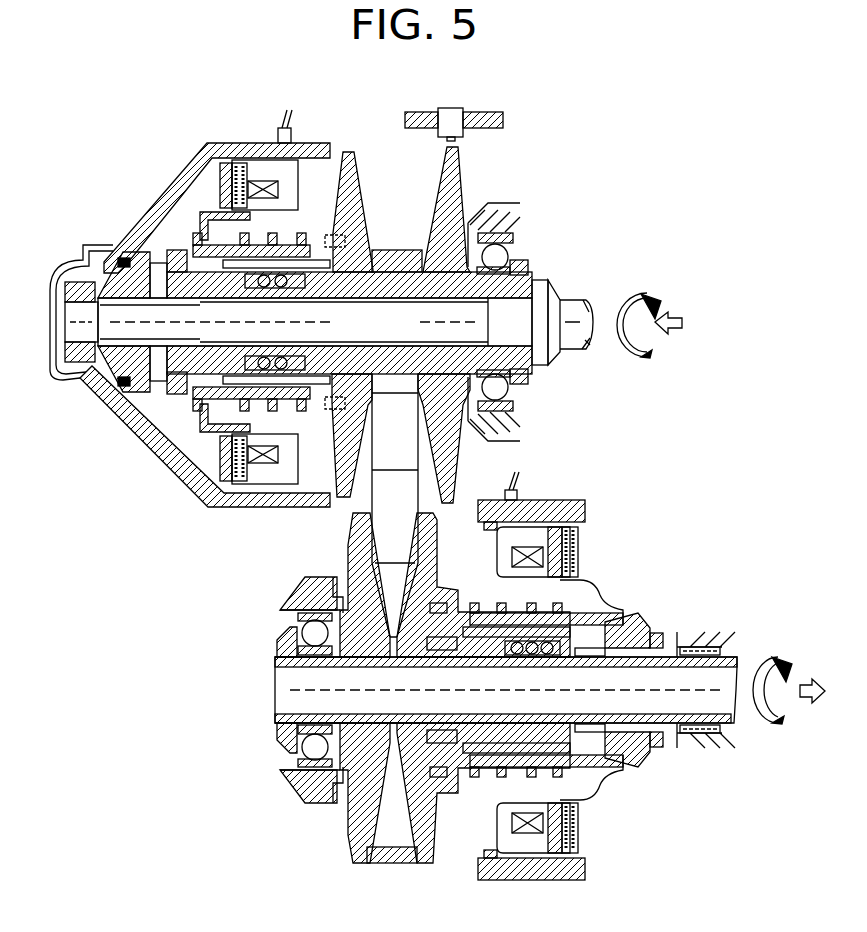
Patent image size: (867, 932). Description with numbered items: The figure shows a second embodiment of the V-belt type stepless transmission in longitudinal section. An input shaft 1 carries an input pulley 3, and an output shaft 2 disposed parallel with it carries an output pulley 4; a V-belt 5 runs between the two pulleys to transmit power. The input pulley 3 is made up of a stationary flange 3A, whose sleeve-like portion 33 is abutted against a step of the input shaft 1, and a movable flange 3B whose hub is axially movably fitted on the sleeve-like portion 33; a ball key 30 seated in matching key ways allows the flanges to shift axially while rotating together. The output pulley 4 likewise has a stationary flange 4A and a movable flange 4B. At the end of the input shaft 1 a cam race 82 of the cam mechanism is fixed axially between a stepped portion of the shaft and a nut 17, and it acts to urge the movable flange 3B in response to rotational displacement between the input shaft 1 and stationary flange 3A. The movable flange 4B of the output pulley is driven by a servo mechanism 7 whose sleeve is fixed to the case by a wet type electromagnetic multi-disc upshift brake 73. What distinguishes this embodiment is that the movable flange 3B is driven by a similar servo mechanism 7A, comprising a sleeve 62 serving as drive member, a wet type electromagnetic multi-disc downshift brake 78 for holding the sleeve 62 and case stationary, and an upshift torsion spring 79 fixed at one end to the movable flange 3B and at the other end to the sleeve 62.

The input shaft 1 is at (577, 307).
The output shaft 2 is at (727, 660).
The input pulley 3 is at (397, 197).
The stationary flange 3A is at (457, 203).
The movable flange 3B is at (357, 207).
The output pulley 4 is at (342, 850).
The stationary flange 4A is at (348, 825).
The movable flange 4B is at (433, 833).
The V-belt 5 is at (400, 248).
The servo mechanism 7 is at (583, 552).
The servo mechanism 7A is at (202, 205).
The nut 17 is at (70, 290).
The ball key 30 is at (268, 288).
The sleeve-like portion 33 is at (327, 322).
The sleeve 62 is at (250, 268).
The upshift brake 73 is at (580, 863).
The downshift brake 78 is at (260, 170).
The upshift torsion spring 79 is at (300, 237).
The cam race 82 is at (127, 256).